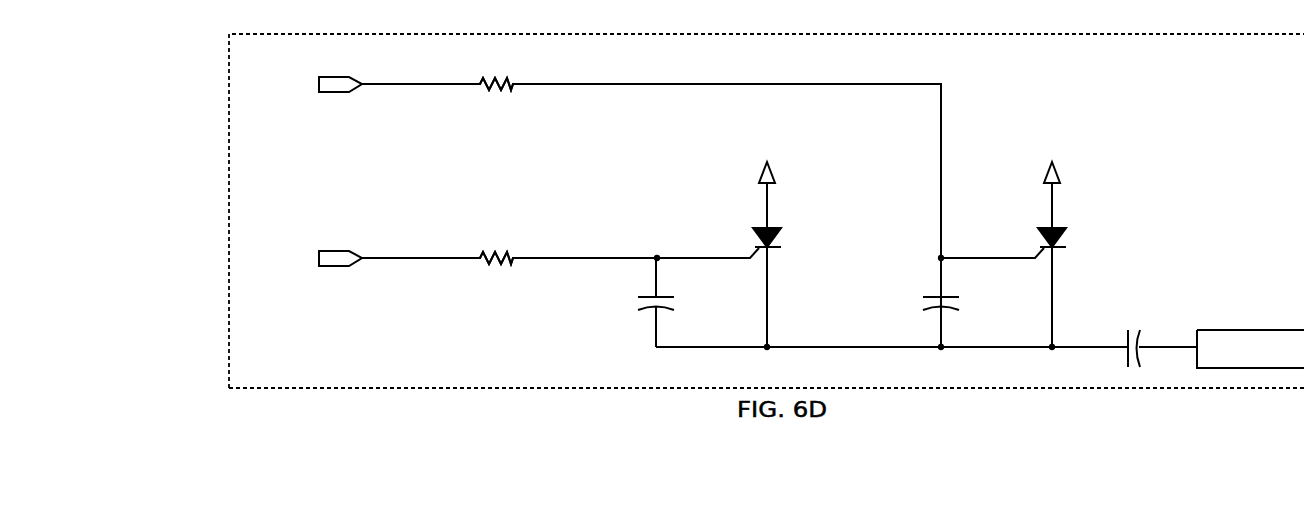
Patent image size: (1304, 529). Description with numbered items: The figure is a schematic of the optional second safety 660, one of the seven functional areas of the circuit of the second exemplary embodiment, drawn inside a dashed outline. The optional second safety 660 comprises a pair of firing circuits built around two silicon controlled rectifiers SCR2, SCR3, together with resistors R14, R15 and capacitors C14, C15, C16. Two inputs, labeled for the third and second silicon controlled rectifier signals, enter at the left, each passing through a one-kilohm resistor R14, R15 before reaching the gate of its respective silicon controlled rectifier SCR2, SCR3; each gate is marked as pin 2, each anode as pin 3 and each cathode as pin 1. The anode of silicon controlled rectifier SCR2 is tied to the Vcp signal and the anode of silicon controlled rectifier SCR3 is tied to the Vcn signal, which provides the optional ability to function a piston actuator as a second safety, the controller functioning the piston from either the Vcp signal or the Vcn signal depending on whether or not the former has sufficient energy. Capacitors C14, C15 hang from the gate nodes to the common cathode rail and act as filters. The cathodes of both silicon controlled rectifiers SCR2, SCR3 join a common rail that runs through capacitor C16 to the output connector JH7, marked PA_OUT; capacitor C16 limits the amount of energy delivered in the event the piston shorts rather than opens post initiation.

The optional second safety 660 is at (229, 200).
The pin 1 (SCR cathode / connector pin) 1 is at (971, 297).
The pin 2 (SCR gate) 2 is at (850, 243).
The pin 3 (SCR anode) 3 is at (900, 195).
The resistor R14 is at (496, 109).
The resistor R15 is at (496, 283).
The capacitor C14 is at (676, 302).
The capacitor C15 is at (957, 322).
The capacitor C16 is at (1133, 330).
The silicon controlled rectifier SCR2 is at (818, 254).
The silicon controlled rectifier SCR3 is at (1103, 254).
The connector JH7 PA_OUT JH7 is at (1250, 337).